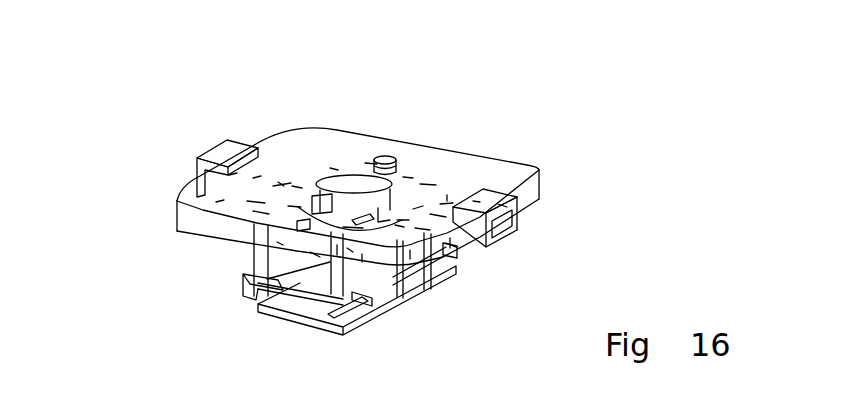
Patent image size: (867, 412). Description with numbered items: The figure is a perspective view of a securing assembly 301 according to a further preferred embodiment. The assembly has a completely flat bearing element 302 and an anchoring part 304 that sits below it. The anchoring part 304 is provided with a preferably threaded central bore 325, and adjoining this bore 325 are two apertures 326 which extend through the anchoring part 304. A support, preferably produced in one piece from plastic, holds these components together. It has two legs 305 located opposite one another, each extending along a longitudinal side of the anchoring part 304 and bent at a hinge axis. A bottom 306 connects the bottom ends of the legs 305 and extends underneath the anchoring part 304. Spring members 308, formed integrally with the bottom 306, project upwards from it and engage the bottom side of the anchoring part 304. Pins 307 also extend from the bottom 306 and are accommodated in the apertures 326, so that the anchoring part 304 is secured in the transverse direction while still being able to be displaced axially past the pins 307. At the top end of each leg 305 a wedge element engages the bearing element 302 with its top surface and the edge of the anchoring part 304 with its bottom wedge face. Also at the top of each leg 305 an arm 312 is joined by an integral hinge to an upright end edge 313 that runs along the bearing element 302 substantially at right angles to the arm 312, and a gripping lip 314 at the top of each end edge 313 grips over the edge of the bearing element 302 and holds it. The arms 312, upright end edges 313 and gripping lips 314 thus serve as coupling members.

The securing assembly 301 is at (501, 87).
The bearing element 302 is at (427, 151).
The anchoring part 304 is at (253, 258).
The legs 305 is at (422, 273).
The bottom 306 is at (312, 302).
The pins 307 is at (317, 187).
The spring members 308 is at (247, 273).
The arm 312 is at (455, 248).
The upright end edge 313 is at (195, 170).
The gripping lip 314 is at (223, 147).
The central bore 325 is at (364, 205).
The apertures 326 is at (342, 200).